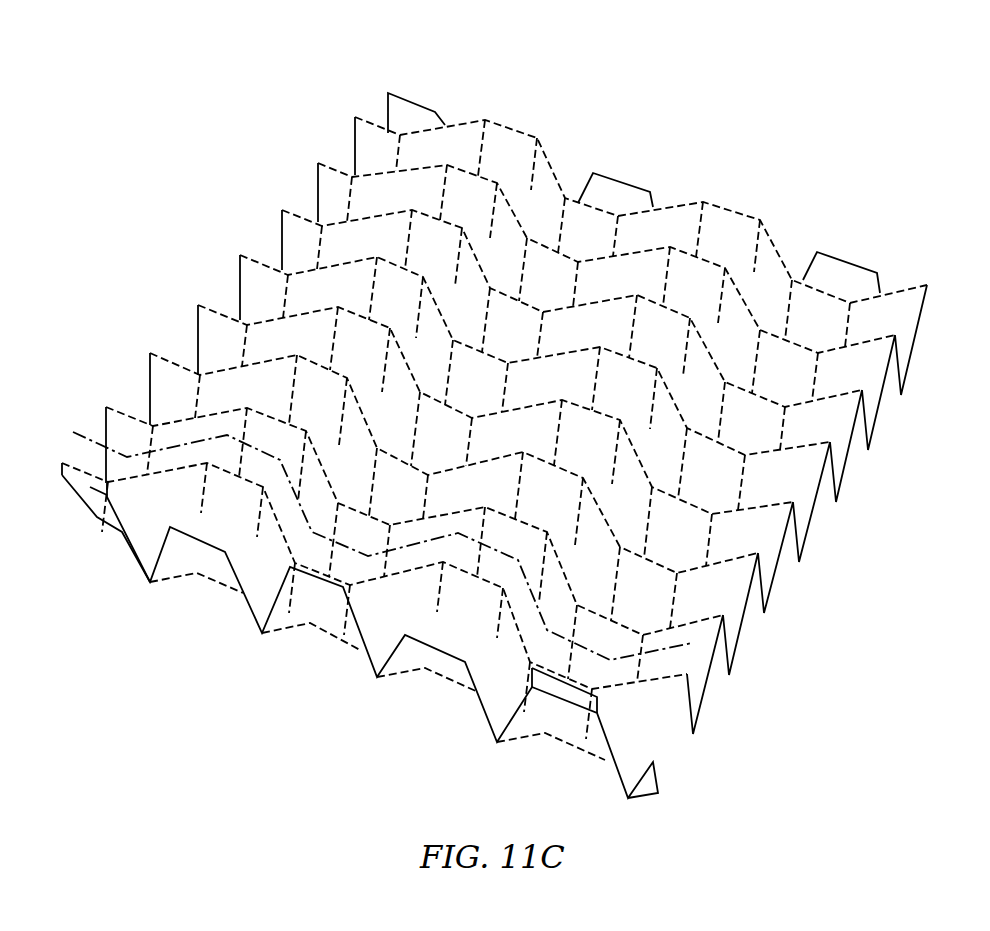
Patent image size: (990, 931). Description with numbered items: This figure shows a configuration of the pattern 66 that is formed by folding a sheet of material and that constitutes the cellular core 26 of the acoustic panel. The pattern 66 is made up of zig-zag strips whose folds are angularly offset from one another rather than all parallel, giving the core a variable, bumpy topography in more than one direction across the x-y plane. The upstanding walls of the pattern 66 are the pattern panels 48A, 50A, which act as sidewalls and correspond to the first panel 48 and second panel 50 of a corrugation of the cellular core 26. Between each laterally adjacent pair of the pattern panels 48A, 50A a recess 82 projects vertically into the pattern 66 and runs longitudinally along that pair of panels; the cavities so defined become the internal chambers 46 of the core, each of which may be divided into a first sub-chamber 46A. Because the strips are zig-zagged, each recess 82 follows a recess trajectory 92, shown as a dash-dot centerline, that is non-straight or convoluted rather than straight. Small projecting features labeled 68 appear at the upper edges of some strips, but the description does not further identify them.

The cellular core 26 is at (522, 416).
The pattern 66 is at (872, 178).
The internal chamber 46 is at (494, 362).
The first sub-chamber 46A is at (350, 112).
The tab 68 is at (413, 97).
The recess 82 is at (748, 441).
The second panel 50 is at (835, 509).
The pattern panel 50A is at (845, 466).
The first panel 48 is at (475, 636).
The pattern panel 48A is at (837, 480).
The recess trajectory 92 is at (678, 652).